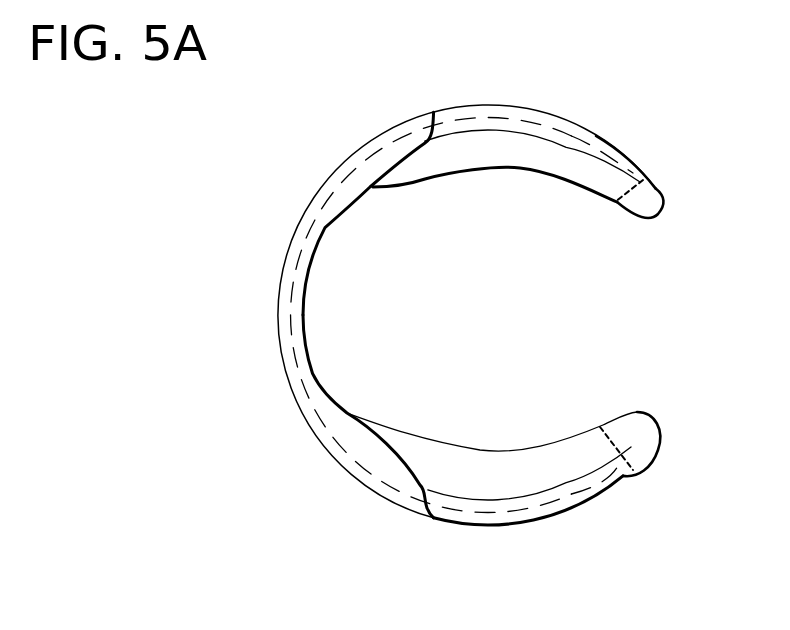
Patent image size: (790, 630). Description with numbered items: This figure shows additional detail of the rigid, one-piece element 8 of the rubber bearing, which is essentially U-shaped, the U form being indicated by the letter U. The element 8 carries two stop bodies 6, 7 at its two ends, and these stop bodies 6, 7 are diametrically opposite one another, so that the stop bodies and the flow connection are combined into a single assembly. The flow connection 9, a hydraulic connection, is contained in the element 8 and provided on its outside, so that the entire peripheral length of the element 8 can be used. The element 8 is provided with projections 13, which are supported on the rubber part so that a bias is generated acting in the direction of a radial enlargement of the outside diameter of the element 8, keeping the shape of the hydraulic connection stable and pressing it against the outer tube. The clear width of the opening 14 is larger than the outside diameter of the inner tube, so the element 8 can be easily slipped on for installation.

The stop body 6 is at (540, 148).
The stop body 7 is at (577, 448).
The element 8 is at (297, 275).
The flow connection 9 is at (317, 425).
The projections 13 is at (647, 452).
The opening 14 is at (668, 313).
The U-shaped member U is at (618, 523).